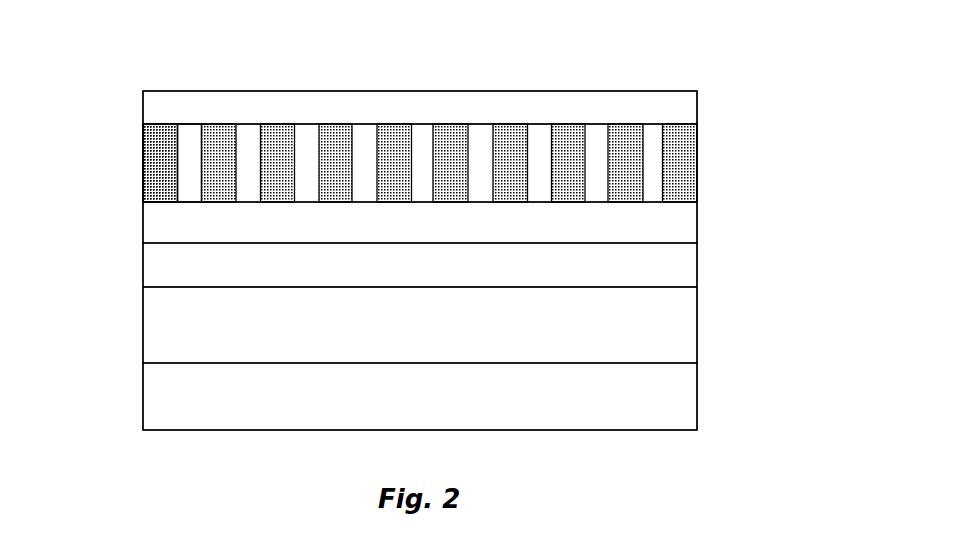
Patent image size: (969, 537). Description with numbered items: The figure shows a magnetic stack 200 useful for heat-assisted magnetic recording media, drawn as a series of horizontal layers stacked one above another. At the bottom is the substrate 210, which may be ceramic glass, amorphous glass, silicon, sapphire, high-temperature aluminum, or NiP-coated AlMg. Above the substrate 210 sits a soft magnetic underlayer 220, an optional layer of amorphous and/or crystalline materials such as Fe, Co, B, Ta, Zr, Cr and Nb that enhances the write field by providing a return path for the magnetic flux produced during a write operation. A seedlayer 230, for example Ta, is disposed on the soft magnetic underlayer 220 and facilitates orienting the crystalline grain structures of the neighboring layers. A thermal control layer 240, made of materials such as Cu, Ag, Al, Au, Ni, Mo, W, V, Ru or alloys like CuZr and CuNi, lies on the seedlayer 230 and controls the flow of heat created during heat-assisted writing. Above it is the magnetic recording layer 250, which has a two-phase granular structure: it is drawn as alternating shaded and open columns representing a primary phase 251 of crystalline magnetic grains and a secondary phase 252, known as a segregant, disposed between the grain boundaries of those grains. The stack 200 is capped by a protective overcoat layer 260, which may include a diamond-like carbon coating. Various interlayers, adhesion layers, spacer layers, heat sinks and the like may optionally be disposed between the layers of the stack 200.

The magnetic stack 200 is at (116, 85).
The substrate 210 is at (697, 410).
The soft magnetic underlayer 220 is at (697, 327).
The seedlayer 230 is at (697, 259).
The thermal control layer 240 is at (697, 222).
The magnetic recording layer 250 is at (697, 158).
The primary phase 251 is at (152, 157).
The secondary phase 252 is at (187, 142).
The protective overcoat layer 260 is at (697, 103).